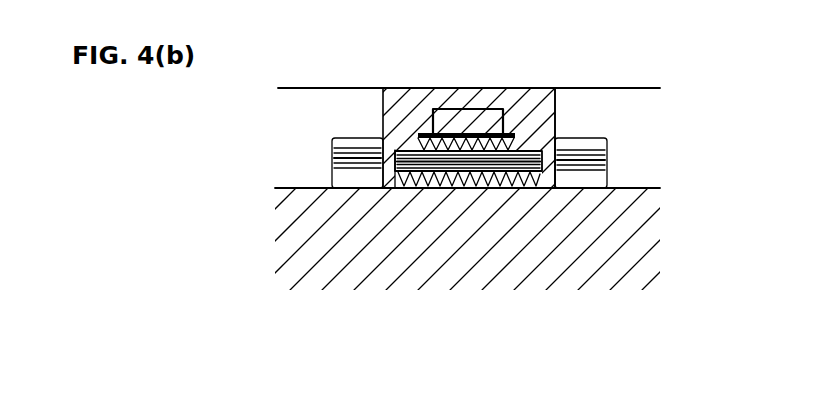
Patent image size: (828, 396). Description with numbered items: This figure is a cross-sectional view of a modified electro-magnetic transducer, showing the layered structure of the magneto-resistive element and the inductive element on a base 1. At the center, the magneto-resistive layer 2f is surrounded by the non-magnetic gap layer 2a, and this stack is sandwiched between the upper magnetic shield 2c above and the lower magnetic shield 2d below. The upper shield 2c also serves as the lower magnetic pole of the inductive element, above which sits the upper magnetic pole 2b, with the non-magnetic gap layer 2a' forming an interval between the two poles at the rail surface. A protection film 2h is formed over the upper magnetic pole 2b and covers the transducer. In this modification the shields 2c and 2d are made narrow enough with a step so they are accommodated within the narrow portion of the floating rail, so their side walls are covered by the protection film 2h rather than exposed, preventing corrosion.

The substrate / base 1 is at (633, 286).
The non-magnetic gap layer 2a is at (397, 249).
The non-magnetic gap layer 2a' is at (483, 88).
The upper magnetic pole 2b is at (453, 108).
The upper magnetic shield 2c is at (548, 125).
The lower magnetic shield 2d is at (512, 176).
The magneto-resistive layer 2f is at (470, 171).
The protection film 2h is at (380, 88).